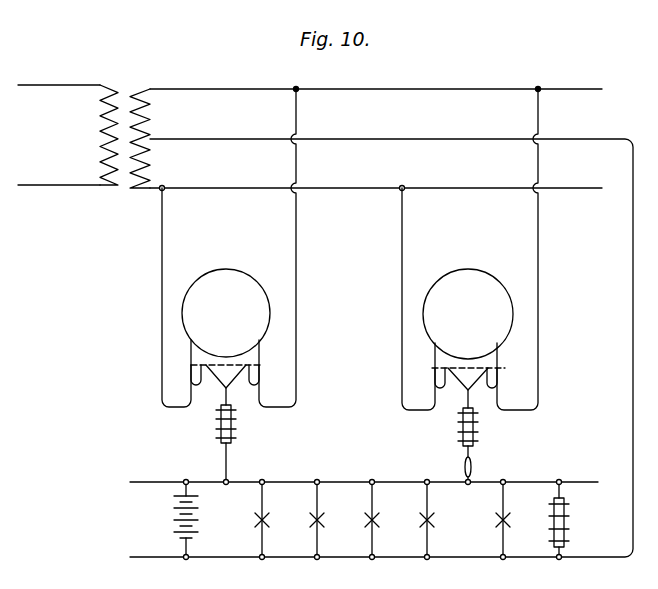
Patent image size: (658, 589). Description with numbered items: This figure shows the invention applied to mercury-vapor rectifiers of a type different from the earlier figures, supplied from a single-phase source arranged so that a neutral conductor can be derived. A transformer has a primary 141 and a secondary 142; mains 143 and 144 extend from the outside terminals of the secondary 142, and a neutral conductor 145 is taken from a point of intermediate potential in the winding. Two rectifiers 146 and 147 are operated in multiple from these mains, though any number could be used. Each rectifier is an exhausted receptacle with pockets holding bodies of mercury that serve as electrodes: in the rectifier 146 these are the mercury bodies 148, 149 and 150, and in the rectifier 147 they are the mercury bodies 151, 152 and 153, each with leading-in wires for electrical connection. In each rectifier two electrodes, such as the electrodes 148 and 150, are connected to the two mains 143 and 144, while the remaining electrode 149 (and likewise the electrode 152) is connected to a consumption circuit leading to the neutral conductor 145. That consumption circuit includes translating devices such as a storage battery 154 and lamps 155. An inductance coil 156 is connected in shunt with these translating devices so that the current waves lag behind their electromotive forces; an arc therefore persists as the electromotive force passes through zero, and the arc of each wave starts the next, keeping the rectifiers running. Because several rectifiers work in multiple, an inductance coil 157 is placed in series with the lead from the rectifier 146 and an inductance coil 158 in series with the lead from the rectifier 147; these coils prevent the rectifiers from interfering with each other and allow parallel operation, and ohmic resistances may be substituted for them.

The primary 141 is at (95, 137).
The secondary 142 is at (150, 130).
The main 143 is at (245, 84).
The main 144 is at (229, 190).
The neutral conductor 145 is at (228, 140).
The rectifier 146 is at (227, 259).
The rectifier 147 is at (471, 260).
The mercury body 148 is at (188, 379).
The mercury body 149 is at (219, 384).
The mercury body 150 is at (257, 379).
The mercury body 151 is at (432, 381).
The mercury body 152 is at (461, 387).
The mercury body 153 is at (500, 381).
The storage battery 154 is at (163, 503).
The lamps 155 is at (364, 520).
The inductance coil 156 is at (565, 529).
The inductance coil 157 is at (236, 437).
The inductance coil 158 is at (476, 437).